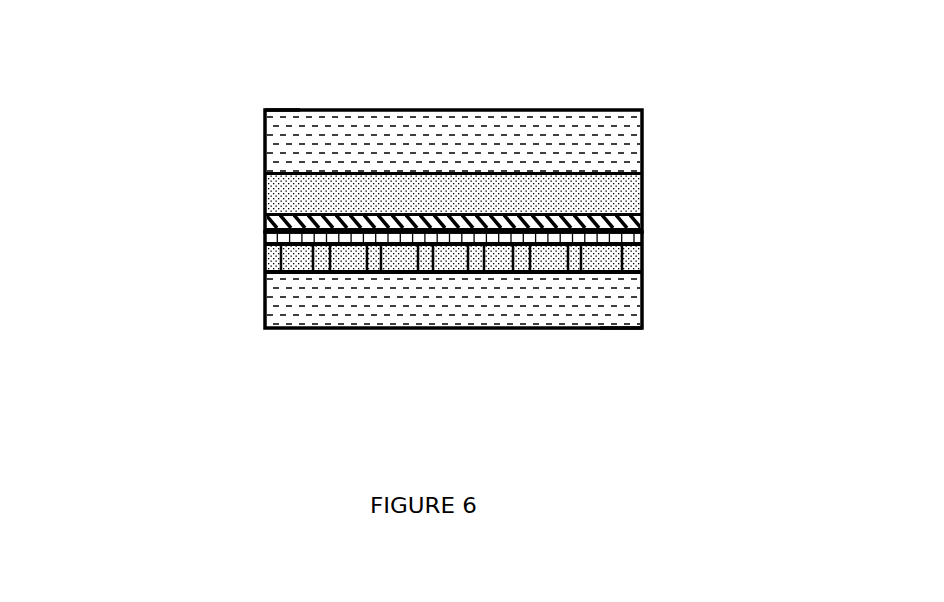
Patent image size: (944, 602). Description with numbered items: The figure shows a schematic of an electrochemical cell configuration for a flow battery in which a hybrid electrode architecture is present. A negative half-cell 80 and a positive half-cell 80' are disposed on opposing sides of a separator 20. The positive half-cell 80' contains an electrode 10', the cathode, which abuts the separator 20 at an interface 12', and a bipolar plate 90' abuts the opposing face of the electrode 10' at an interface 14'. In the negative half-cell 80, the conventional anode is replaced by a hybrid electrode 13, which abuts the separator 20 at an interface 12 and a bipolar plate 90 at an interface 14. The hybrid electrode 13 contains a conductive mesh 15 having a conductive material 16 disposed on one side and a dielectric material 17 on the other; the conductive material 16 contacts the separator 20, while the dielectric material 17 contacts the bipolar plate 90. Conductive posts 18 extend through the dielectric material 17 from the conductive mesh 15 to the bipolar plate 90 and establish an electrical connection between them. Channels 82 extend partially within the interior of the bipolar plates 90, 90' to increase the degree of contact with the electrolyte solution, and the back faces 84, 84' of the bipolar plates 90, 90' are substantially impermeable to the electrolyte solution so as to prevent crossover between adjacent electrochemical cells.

The positive half-cell 80' is at (563, 167).
The negative half-cell 80 is at (564, 281).
The bipolar plate 90' is at (518, 124).
The bipolar plate 90 is at (516, 284).
The electrode 10' is at (519, 171).
The separator 20 is at (642, 223).
The interface 12' is at (393, 206).
The interface 12 is at (402, 222).
The interface 14' is at (393, 159).
The interface 14 is at (413, 290).
The hybrid electrode 13 is at (645, 231).
The conductive mesh 15 is at (263, 249).
The conductive material 16 is at (263, 237).
The dielectric material 17 is at (263, 261).
The conductive posts 18 is at (330, 272).
The channels 82 is at (403, 130).
The back face 84' is at (271, 79).
The back face 84 is at (631, 376).